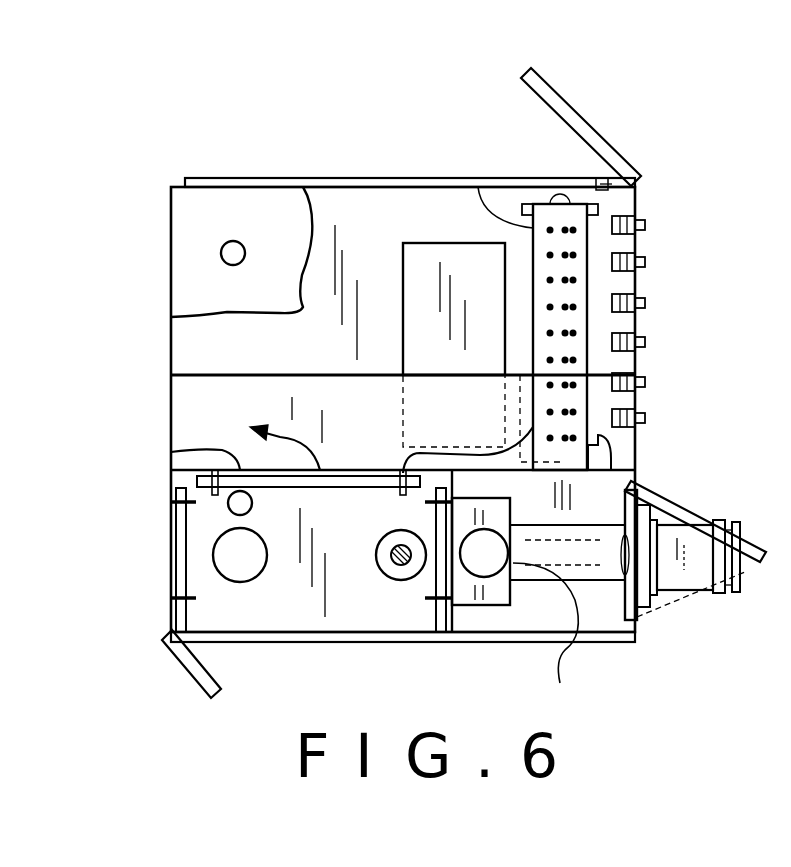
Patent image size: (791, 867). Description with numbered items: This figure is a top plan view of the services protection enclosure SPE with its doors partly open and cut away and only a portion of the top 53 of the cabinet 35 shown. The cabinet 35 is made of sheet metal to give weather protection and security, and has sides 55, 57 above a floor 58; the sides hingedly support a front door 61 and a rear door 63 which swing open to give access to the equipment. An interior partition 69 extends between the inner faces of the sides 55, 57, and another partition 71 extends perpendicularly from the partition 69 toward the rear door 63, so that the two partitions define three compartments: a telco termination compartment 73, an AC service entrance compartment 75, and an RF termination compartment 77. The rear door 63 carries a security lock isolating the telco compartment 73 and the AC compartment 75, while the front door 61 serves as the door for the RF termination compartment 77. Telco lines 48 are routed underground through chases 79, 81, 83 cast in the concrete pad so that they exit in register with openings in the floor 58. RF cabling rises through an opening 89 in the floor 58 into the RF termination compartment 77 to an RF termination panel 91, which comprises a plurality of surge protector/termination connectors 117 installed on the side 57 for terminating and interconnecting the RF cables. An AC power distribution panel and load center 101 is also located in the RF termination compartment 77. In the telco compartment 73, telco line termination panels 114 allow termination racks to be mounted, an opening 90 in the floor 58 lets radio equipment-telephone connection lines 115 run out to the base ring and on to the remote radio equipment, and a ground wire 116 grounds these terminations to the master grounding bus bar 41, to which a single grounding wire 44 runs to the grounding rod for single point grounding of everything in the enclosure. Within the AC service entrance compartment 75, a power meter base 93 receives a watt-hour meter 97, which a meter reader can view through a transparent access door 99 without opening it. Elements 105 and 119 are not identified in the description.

The services protection enclosure SPE is at (262, 172).
The cabinet 35 is at (207, 176).
The master grounding bus bar 41 is at (590, 235).
The grounding wire 44 is at (608, 454).
The telco lines 48 is at (400, 565).
The top 53 is at (211, 218).
The side 55 is at (172, 410).
The side 57 is at (641, 438).
The floor 58 is at (349, 224).
The front door 61 is at (580, 117).
The rear door 63 is at (183, 668).
The interior partition 69 is at (200, 476).
The partition 71 is at (456, 617).
The telco termination compartment 73 is at (308, 580).
The AC service entrance compartment 75 is at (600, 603).
The RF termination compartment 77 is at (380, 216).
The chase 79 is at (655, 342).
The chase 81 is at (385, 578).
The chase 83 is at (590, 556).
The opening 89 is at (405, 328).
The opening 90 is at (229, 509).
The RF termination panel 91 is at (664, 256).
The power meter base 93 is at (547, 640).
The watt-hour meter 97 is at (637, 620).
The transparent access door 99 is at (680, 510).
The AC power distribution panel and load center 101 is at (251, 364).
The microphone assembly 105 is at (692, 567).
The telco line termination panels 114 is at (188, 580).
The radio equipment-telephone connection lines 115 is at (310, 470).
The ground wire 116 is at (408, 445).
The surge protectors/termination connectors 117 is at (647, 304).
The cable 119 is at (478, 187).